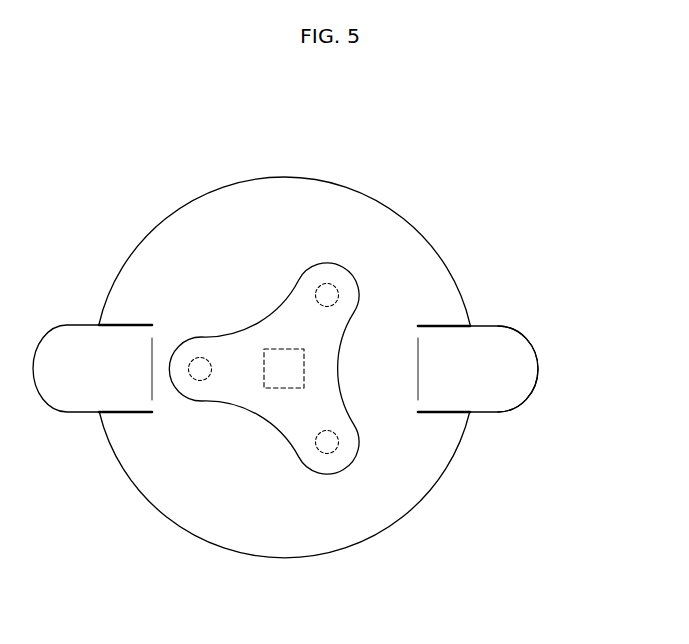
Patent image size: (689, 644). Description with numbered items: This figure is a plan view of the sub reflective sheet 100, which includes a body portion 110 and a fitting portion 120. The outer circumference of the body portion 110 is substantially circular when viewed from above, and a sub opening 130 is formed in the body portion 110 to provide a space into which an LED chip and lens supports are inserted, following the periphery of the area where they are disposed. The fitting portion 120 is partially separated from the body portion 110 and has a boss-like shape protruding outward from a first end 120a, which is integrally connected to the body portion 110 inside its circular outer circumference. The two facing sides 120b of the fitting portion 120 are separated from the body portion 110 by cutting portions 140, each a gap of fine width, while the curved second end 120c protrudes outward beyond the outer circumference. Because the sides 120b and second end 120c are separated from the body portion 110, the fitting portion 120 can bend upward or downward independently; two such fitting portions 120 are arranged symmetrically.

The sub reflective sheet 100 is at (411, 126).
The body portion 110 is at (237, 205).
The fitting portion 120 is at (511, 373).
The first end 120a is at (418, 367).
The sides 120b is at (440, 412).
The second end 120c is at (538, 368).
The sub opening 130 is at (289, 442).
The cutting portions 140 is at (436, 325).